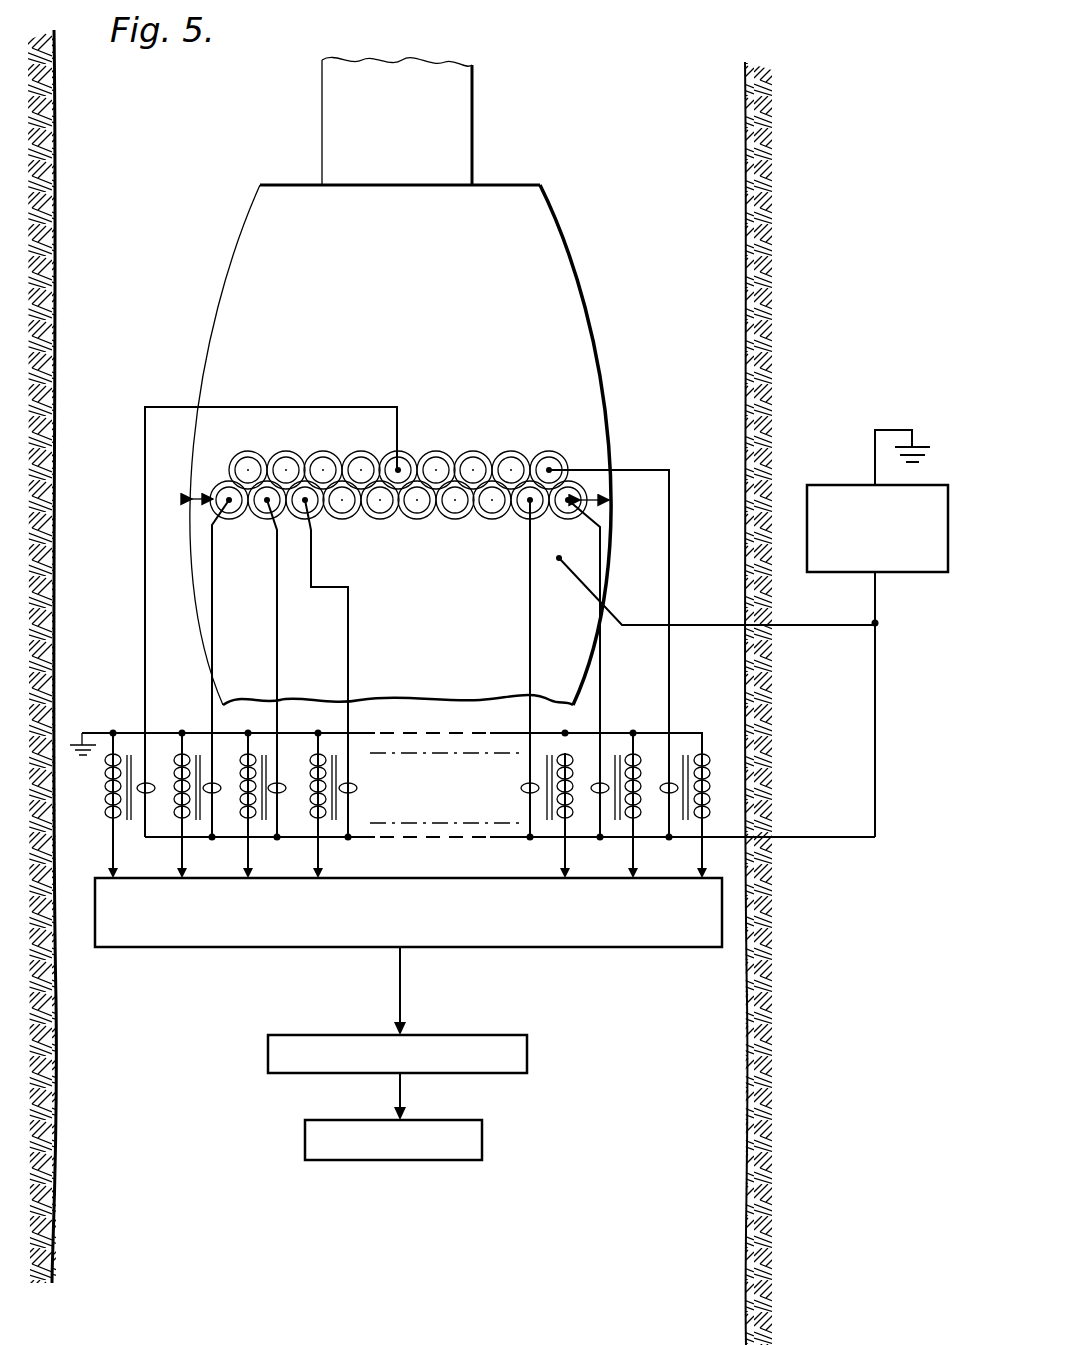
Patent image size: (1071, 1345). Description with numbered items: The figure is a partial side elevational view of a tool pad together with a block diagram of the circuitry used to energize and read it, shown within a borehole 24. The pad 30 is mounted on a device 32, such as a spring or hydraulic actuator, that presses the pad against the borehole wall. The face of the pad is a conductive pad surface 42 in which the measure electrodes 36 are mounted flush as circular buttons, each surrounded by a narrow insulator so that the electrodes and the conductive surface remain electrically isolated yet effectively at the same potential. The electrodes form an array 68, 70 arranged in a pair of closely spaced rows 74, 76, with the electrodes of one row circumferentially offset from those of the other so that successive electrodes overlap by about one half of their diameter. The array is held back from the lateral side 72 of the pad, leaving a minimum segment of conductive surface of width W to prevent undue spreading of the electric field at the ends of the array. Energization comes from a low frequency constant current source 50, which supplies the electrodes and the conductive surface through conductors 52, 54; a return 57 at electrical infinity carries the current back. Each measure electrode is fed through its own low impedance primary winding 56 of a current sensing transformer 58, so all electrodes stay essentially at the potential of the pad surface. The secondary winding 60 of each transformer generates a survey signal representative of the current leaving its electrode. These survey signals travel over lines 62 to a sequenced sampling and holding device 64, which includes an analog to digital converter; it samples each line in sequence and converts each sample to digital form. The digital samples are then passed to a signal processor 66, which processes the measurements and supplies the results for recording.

The borehole 24 is at (158, 320).
The pad 30 is at (578, 232).
The device 32 is at (473, 100).
The measure electrode 36 is at (243, 456).
The conductive pad surface 42 is at (545, 310).
The constant current source 50 is at (833, 482).
The conductor 52 is at (804, 626).
The conductor 54 is at (822, 840).
The primary winding 56 is at (357, 787).
The return 57 is at (912, 432).
The current sensing transformer 58 is at (197, 745).
The secondary winding 60 is at (120, 790).
The line 62 is at (178, 842).
The sequenced sampling and holding device 64 is at (205, 950).
The signal processor 66 is at (265, 1052).
The array of measure electrodes 68 is at (208, 500).
The array of measure electrodes 70 is at (212, 480).
The lateral side 72 is at (616, 535).
The row 74 is at (574, 456).
The row 76 is at (472, 522).
The width W is at (200, 504).